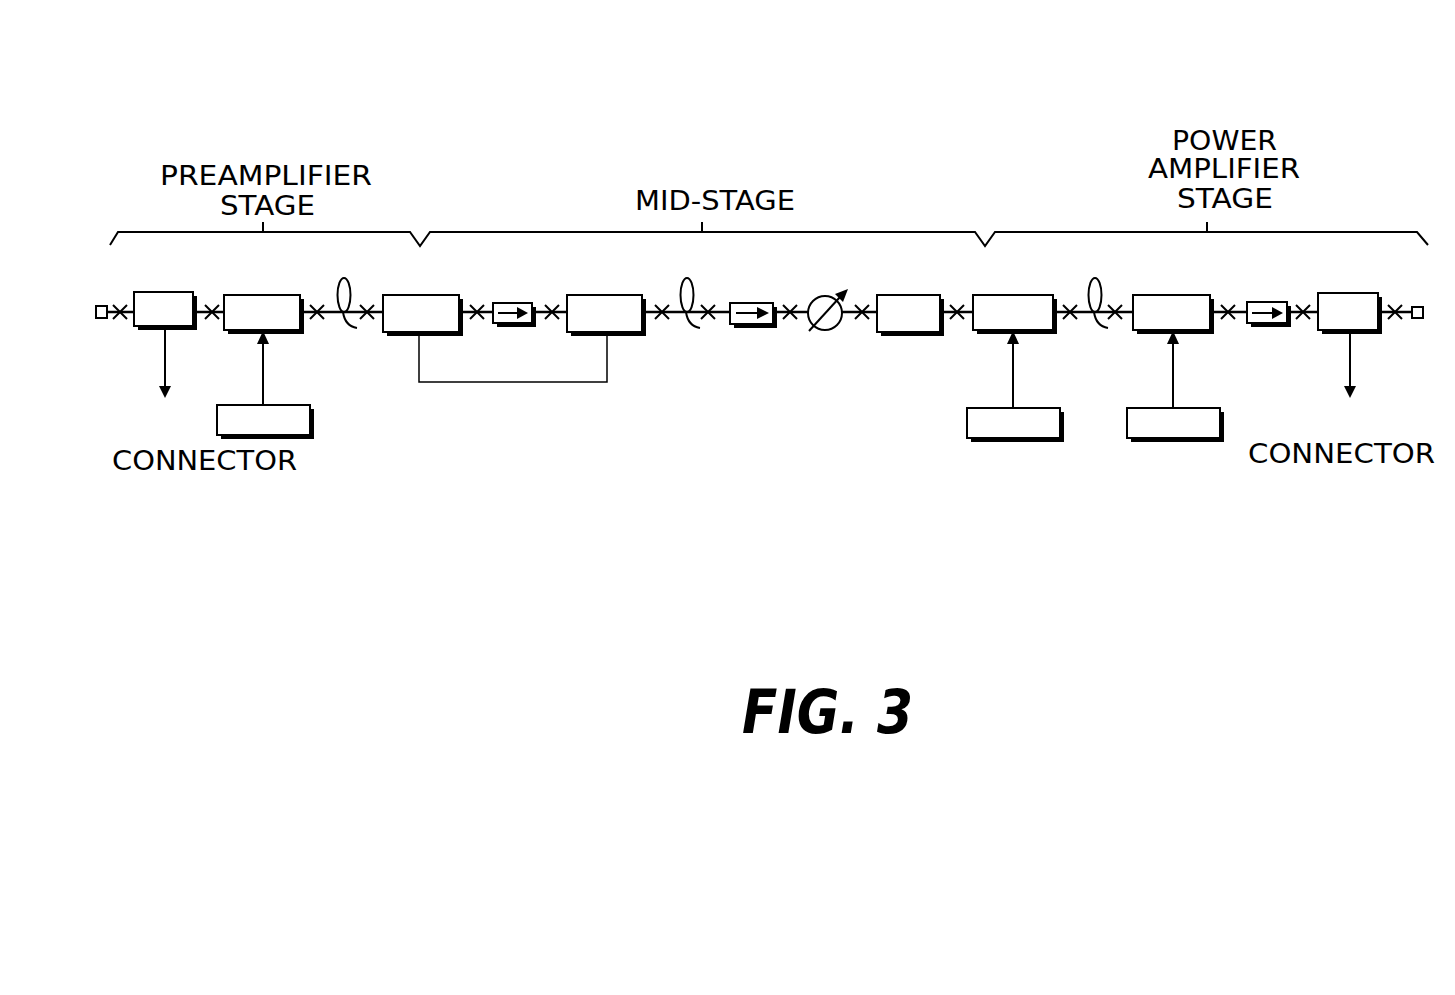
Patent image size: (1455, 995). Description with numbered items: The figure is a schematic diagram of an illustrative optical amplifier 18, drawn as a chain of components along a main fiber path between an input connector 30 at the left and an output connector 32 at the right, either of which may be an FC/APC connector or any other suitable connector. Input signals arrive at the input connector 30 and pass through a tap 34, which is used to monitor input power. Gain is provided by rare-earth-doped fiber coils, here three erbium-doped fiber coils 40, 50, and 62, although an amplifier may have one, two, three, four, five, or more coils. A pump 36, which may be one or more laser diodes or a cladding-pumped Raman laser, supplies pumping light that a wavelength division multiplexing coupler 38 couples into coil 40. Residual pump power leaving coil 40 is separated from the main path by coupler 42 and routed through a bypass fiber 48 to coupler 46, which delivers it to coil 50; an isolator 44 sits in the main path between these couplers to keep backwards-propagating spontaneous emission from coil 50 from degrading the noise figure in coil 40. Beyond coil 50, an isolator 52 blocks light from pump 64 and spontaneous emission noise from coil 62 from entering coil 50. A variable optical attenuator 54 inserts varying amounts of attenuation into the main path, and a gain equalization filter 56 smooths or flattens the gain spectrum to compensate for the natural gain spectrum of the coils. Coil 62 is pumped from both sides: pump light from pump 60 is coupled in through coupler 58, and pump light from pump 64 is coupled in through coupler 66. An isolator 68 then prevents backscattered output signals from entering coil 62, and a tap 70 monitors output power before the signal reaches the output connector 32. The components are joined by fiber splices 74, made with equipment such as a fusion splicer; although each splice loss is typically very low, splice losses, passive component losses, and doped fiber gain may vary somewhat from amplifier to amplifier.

The optical amplifier 18 is at (880, 100).
The input connector 30 is at (106, 320).
The output connector 32 is at (1412, 320).
The tap 34 is at (150, 330).
The pump 36 is at (310, 438).
The wavelength division multiplexing coupler 38 is at (282, 334).
The erbium-doped fiber coil 40 is at (348, 322).
The coupler 42 is at (444, 335).
The isolator 44 is at (518, 326).
The coupler 46 is at (600, 295).
The bypass fiber 48 is at (505, 382).
The erbium-doped fiber coil 50 is at (705, 272).
The isolator 52 is at (762, 328).
The variable optical attenuator 54 is at (832, 331).
The gain equalization filter 56 is at (905, 335).
The coupler 58 is at (1043, 334).
The pump 60 is at (980, 441).
The erbium-doped fiber coil 62 is at (1115, 272).
The pump 64 is at (1143, 441).
The coupler 66 is at (1190, 331).
The isolator 68 is at (1273, 327).
The tap 70 is at (1371, 293).
The fiber splices 74 is at (762, 311).